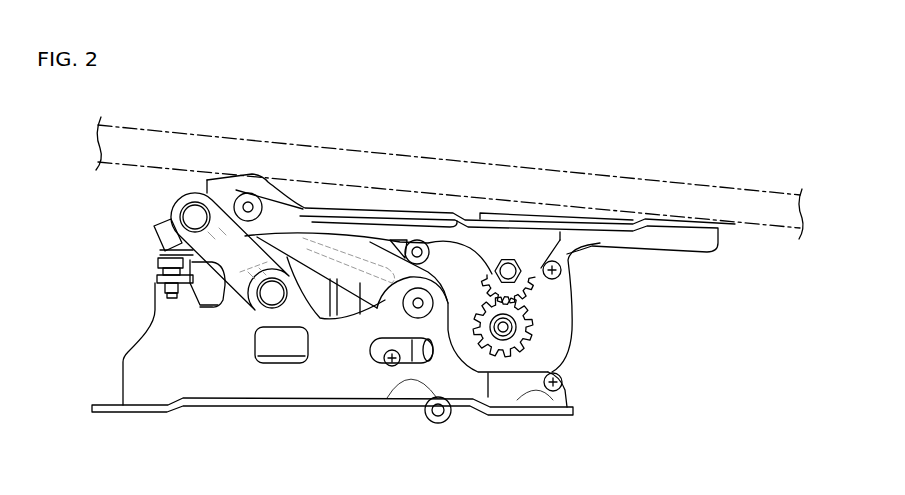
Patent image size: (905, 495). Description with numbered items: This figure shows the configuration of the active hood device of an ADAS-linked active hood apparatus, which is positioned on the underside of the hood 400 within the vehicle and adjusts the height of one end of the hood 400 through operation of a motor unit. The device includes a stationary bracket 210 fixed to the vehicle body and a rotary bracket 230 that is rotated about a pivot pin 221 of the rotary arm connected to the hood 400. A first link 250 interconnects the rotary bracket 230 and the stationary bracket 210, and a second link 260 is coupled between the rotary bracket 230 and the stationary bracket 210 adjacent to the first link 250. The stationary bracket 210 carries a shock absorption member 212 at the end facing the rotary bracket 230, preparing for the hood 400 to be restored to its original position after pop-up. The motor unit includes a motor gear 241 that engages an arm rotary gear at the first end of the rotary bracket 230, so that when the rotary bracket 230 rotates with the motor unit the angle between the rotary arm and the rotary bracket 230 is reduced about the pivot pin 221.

The stationary bracket 210 is at (135, 381).
The shock absorption member 212 is at (158, 263).
The pivot pin 221 is at (507, 261).
The rotary bracket 230 is at (292, 213).
The motor gear 241 is at (498, 358).
The first link 250 is at (215, 275).
The second link 260 is at (352, 266).
The hood 400 is at (715, 192).